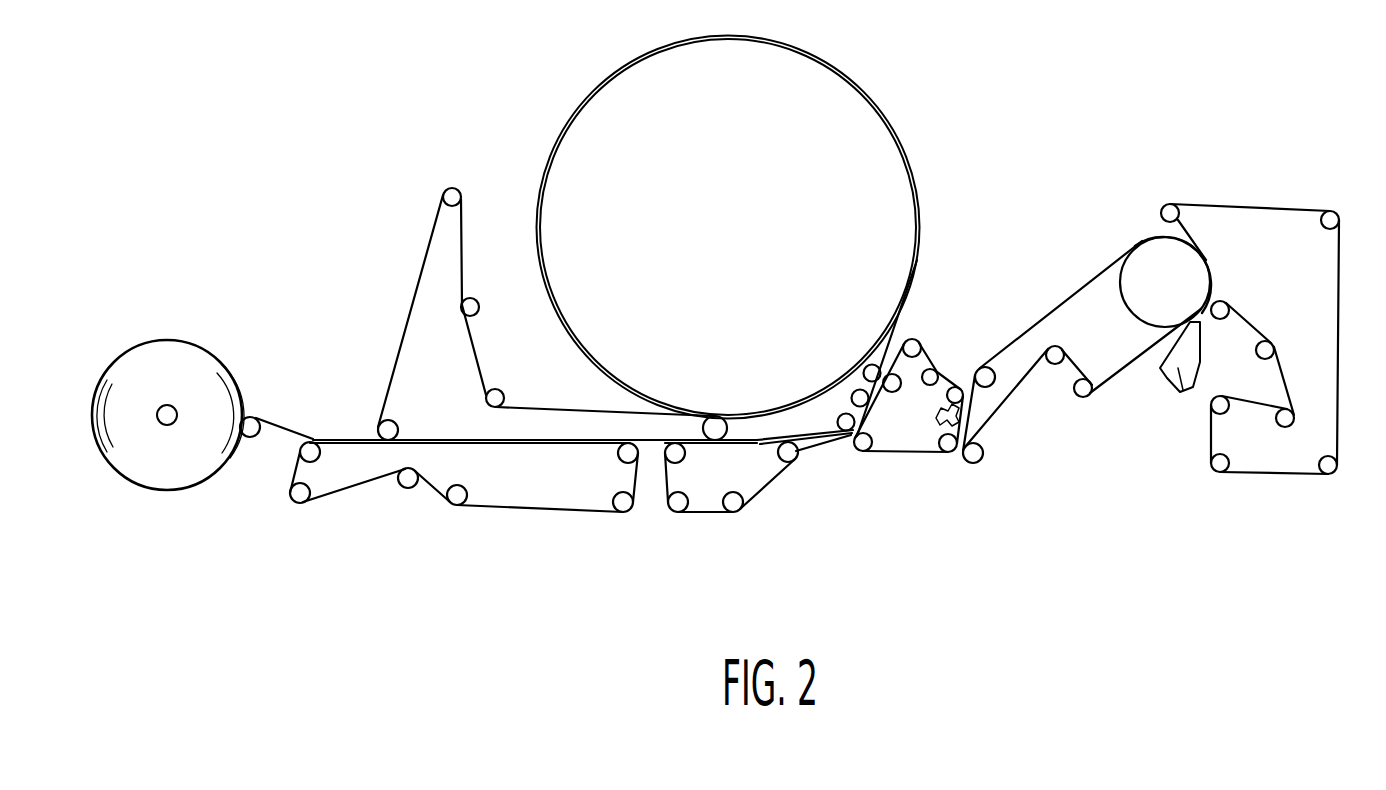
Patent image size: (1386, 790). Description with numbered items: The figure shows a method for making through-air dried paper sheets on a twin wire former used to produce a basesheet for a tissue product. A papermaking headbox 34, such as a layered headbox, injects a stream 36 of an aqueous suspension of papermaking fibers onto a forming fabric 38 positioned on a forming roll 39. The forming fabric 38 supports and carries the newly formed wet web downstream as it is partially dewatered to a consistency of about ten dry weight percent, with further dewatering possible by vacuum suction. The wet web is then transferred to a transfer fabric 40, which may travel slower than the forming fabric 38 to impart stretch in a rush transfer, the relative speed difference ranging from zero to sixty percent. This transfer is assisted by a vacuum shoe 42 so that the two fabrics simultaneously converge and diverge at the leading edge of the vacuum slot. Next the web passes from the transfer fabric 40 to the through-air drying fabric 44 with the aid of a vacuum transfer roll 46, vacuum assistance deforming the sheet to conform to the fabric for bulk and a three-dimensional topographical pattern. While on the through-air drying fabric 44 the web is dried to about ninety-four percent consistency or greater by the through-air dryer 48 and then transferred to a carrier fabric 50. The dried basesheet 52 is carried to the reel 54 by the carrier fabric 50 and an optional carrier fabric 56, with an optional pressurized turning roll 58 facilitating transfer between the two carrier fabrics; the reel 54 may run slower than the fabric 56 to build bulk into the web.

The papermaking headbox 34 is at (1172, 383).
The stream 36 is at (1207, 317).
The forming fabric 38 is at (1117, 383).
The forming roll 39 is at (1179, 298).
The transfer fabric 40 is at (948, 384).
The vacuum shoe 42 is at (935, 420).
The through-air drying fabric 44 is at (829, 441).
The vacuum transfer roll 46 is at (850, 404).
The through-air dryer 48 is at (747, 243).
The carrier fabric 50 is at (418, 274).
The dried basesheet 52 is at (653, 450).
The reel 54 is at (168, 430).
The optional carrier fabric 56 is at (349, 490).
The pressurized turning roll 58 is at (400, 426).